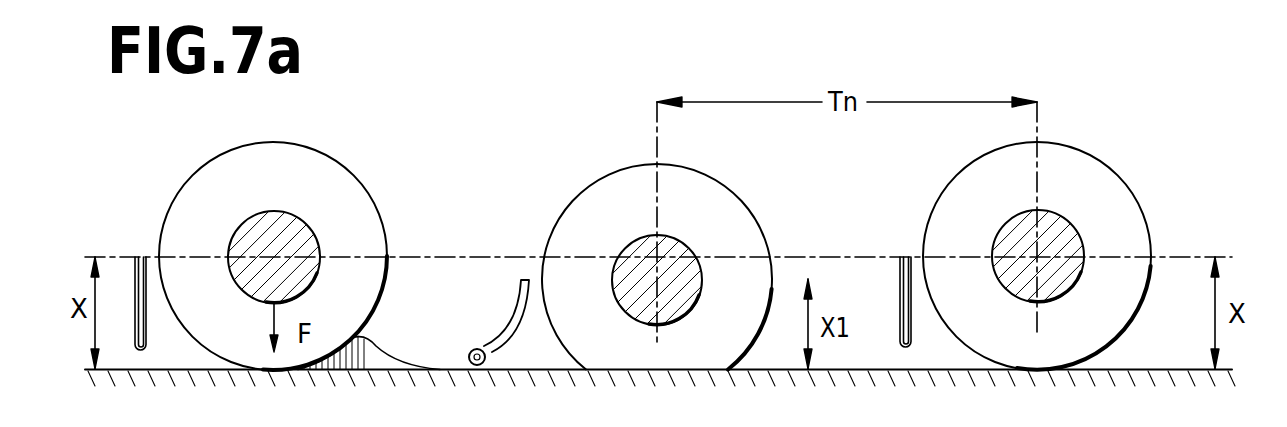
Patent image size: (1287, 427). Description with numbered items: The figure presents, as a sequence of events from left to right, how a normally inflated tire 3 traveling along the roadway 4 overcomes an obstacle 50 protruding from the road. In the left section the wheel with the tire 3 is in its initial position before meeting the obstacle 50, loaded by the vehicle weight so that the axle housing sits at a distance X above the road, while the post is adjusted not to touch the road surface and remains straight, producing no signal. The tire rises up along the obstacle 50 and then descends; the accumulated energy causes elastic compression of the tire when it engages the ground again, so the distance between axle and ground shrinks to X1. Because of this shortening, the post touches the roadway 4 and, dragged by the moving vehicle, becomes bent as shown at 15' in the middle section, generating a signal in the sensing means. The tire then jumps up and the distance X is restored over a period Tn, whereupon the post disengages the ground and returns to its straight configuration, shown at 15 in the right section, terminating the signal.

The tire 3 is at (166, 215).
The roadway 4 is at (196, 369).
The post 15 is at (883, 302).
The bent post 15' is at (489, 322).
The obstacle 50 is at (392, 352).